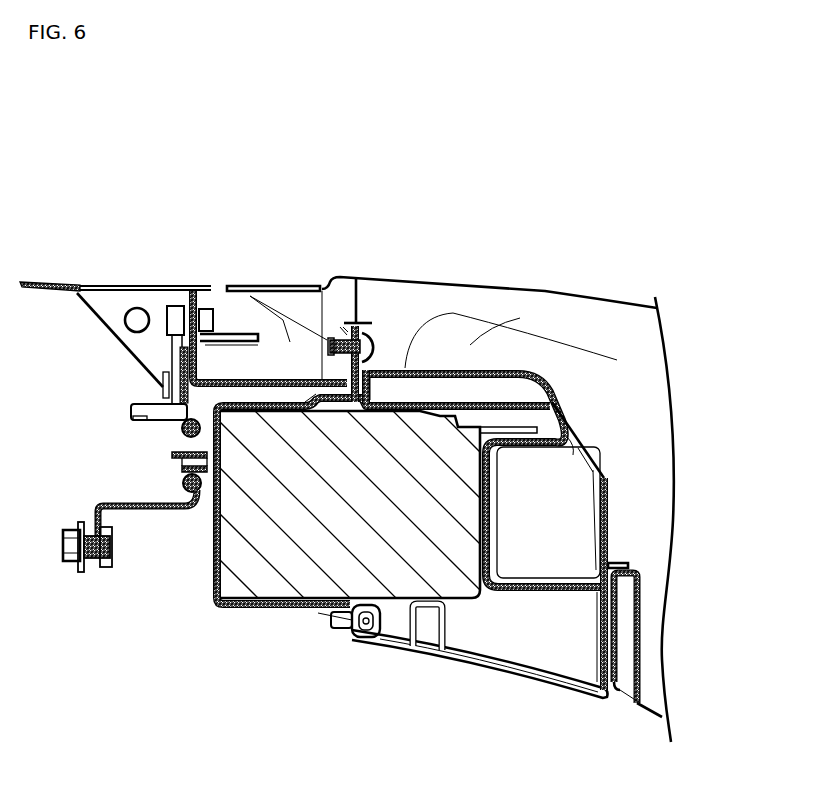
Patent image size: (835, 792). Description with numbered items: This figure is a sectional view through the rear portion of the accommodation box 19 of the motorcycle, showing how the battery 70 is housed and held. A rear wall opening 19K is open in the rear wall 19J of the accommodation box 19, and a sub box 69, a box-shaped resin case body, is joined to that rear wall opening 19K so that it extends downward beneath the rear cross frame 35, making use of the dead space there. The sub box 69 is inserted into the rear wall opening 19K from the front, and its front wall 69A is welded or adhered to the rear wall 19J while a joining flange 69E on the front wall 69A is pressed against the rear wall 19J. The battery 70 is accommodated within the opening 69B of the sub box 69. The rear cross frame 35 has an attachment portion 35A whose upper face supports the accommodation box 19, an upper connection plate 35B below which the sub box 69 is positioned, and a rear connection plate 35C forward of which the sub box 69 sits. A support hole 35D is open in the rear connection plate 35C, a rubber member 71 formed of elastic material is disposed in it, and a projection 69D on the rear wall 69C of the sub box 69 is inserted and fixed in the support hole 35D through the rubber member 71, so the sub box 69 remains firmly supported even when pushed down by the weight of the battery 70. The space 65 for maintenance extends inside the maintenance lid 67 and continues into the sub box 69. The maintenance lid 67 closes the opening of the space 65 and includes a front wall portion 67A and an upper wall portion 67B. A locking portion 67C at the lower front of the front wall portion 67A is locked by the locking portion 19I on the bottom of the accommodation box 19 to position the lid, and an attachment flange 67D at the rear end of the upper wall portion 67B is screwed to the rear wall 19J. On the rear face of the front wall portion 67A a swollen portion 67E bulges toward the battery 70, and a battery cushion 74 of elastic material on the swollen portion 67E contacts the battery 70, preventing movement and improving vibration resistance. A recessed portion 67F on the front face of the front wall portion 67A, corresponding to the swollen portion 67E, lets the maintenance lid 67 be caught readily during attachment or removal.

The accommodation box 19 is at (493, 662).
The locking portion 19I is at (640, 573).
The rear wall 19J is at (356, 277).
The rear wall opening 19K is at (322, 395).
The rear cross frame 35 is at (183, 295).
The attachment portion 35A is at (250, 353).
The upper connection plate 35B is at (270, 382).
The rear connection plate 35C is at (230, 390).
The support hole 35D is at (182, 437).
The space for maintenance 65 is at (524, 638).
The maintenance lid 67 is at (560, 401).
The front wall portion 67A is at (600, 463).
The upper wall portion 67B is at (470, 370).
The locking portion 67C is at (623, 567).
The attachment flange 67D is at (369, 322).
The swollen portion 67E is at (512, 592).
The recessed portion 67F is at (265, 590).
The sub box 69 is at (348, 535).
The front wall 69A is at (404, 368).
The opening 69B is at (467, 372).
The rear wall 69C is at (213, 540).
The projection 69D is at (180, 455).
The joining flange 69E is at (378, 464).
The battery 70 is at (273, 557).
The rubber member 71 is at (180, 488).
The battery cushion 74 is at (337, 612).